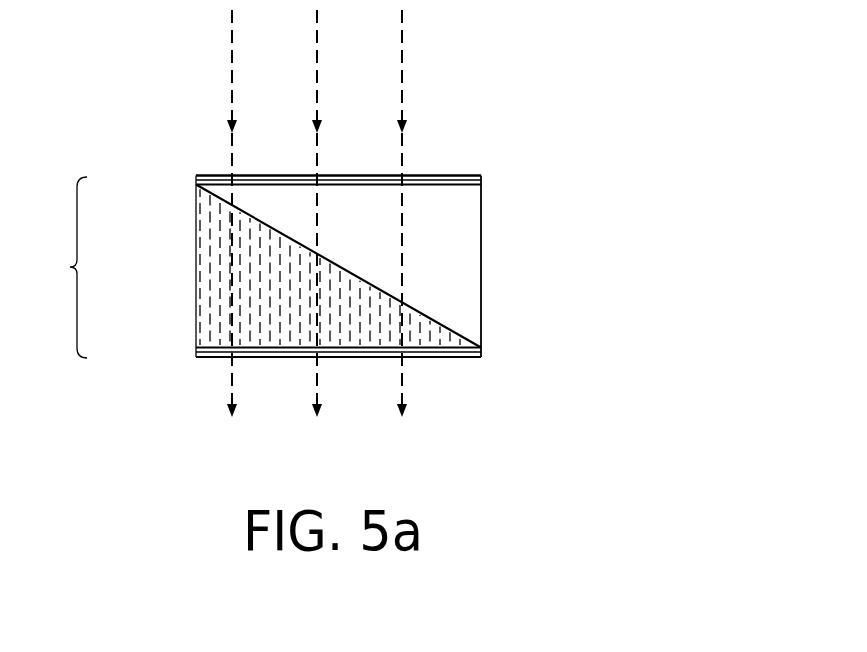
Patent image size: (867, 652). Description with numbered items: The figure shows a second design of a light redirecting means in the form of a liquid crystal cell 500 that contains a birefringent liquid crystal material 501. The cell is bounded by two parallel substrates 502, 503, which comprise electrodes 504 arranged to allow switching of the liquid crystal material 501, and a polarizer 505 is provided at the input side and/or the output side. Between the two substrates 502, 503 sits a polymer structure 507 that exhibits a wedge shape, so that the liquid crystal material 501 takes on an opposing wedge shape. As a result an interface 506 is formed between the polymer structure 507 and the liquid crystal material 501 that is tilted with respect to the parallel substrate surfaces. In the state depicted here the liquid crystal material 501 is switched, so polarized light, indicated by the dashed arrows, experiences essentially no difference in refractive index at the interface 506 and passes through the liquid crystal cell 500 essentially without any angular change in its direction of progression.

The liquid crystal cell 500 is at (56, 267).
The birefringent liquid crystal material 501 is at (210, 257).
The substrate 502 is at (485, 143).
The substrate 503 is at (460, 358).
The electrodes 504 is at (445, 187).
The polarizer 505 is at (364, 145).
The interface 506 is at (345, 269).
The polymer structure 507 is at (470, 278).